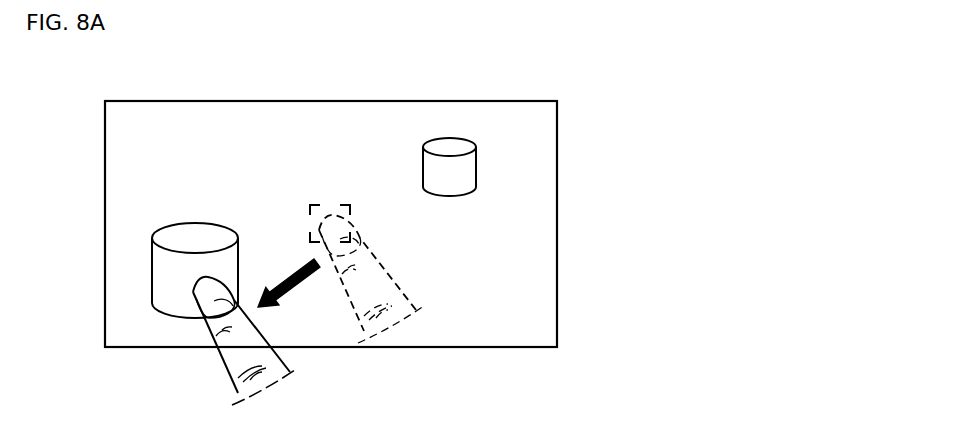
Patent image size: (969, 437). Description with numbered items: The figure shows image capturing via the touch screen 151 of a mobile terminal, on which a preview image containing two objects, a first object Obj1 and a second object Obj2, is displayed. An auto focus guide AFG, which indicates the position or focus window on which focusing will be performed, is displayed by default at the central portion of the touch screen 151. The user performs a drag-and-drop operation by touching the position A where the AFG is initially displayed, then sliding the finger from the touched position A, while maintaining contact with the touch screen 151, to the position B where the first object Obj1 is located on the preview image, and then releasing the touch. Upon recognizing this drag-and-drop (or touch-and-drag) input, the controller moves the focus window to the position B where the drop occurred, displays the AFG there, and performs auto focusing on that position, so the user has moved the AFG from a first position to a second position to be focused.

The touch screen 151 is at (557, 235).
The first object Obj1 is at (152, 282).
The second object Obj2 is at (450, 145).
The auto focus guide AFG is at (313, 204).
The position A is at (371, 283).
The position B is at (245, 344).